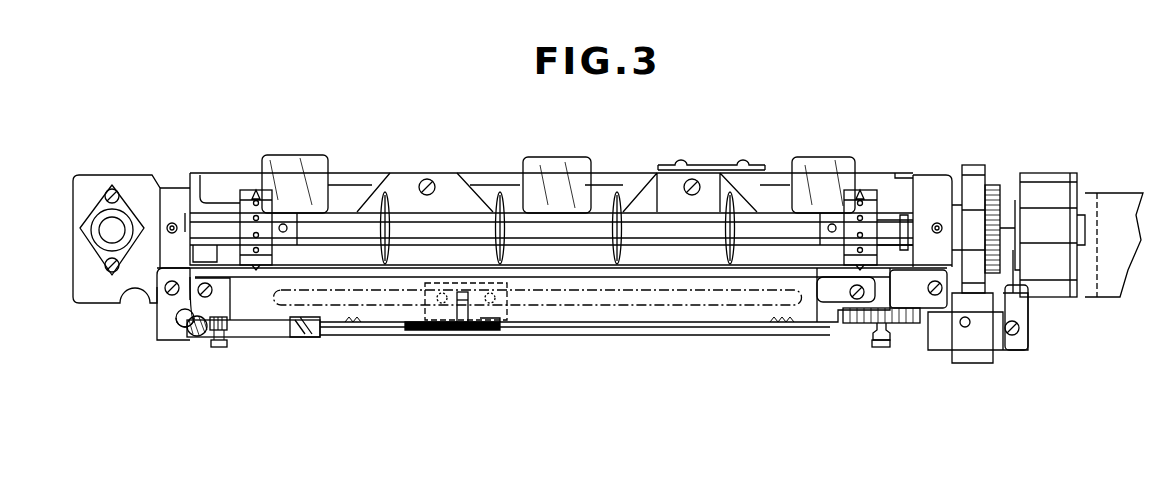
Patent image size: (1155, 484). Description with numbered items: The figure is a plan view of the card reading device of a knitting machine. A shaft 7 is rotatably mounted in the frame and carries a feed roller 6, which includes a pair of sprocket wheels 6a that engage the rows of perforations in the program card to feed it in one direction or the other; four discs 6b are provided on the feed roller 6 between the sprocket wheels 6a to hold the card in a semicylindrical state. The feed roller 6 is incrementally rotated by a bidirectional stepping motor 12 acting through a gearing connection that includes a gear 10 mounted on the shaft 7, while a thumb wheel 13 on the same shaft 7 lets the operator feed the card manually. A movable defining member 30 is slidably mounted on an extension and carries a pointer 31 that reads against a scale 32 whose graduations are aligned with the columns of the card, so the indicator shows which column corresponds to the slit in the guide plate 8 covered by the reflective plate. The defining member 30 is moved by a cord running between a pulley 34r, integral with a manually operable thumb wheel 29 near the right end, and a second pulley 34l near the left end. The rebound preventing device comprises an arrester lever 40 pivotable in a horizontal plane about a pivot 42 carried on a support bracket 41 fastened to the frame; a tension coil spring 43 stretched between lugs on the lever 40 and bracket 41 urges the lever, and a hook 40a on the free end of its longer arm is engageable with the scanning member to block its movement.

The feed roller 6 is at (517, 225).
The sprocket wheels 6a is at (256, 188).
The discs 6b is at (382, 190).
The shaft 7 is at (893, 227).
The guide plate 8 is at (690, 262).
The gear 10 is at (993, 185).
The bidirectional stepping motor 12 is at (1050, 185).
The thumb wheel 13 is at (972, 165).
The thumb wheel 29 is at (853, 320).
The movable defining member 30 is at (473, 330).
The pointer 31 is at (457, 313).
The scale 32 is at (627, 313).
The pulley 34l is at (232, 338).
The pulley 34r is at (880, 338).
The arrester lever 40 is at (287, 338).
The hook 40a is at (305, 330).
The support bracket 41 is at (170, 335).
The pivot 42 is at (172, 319).
The tension coil spring 43 is at (203, 338).